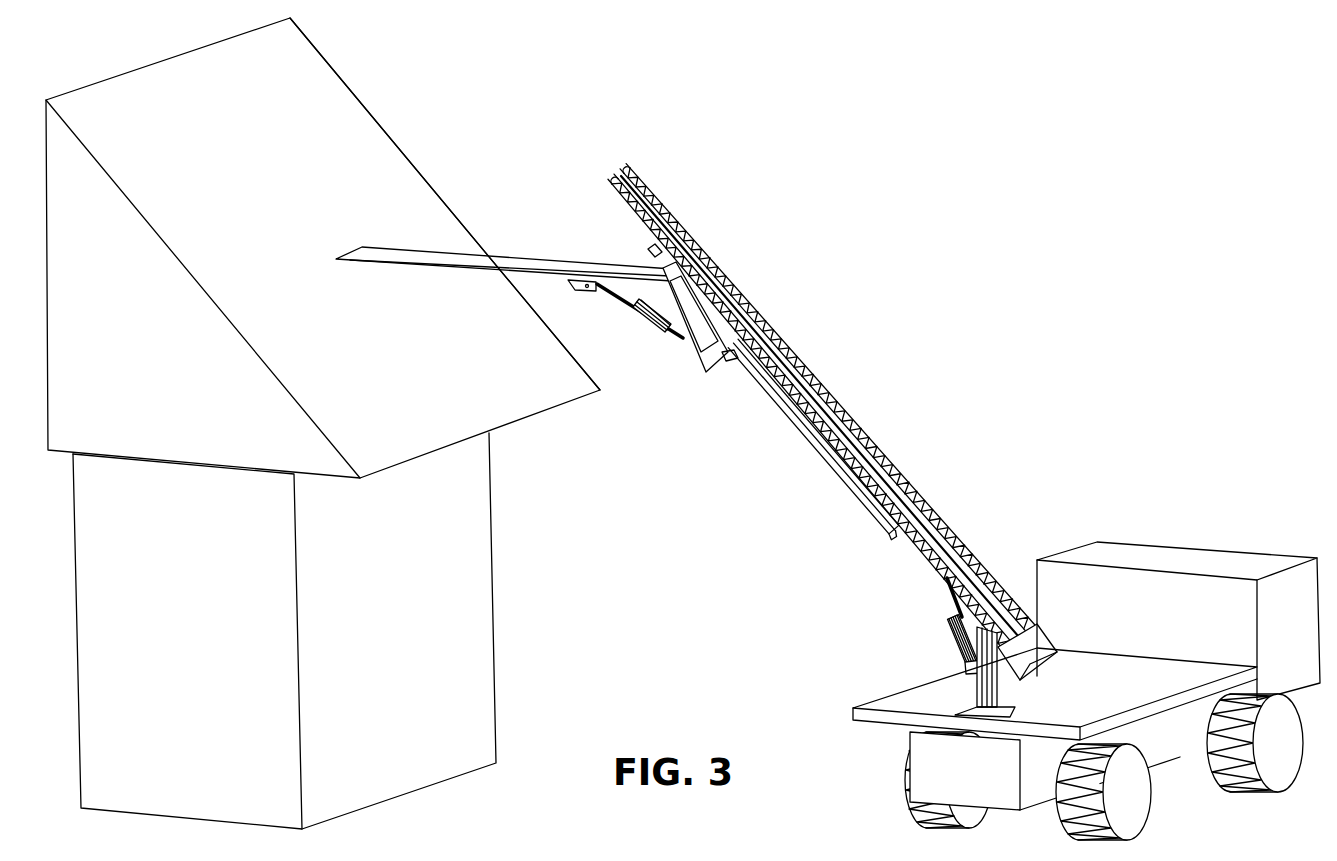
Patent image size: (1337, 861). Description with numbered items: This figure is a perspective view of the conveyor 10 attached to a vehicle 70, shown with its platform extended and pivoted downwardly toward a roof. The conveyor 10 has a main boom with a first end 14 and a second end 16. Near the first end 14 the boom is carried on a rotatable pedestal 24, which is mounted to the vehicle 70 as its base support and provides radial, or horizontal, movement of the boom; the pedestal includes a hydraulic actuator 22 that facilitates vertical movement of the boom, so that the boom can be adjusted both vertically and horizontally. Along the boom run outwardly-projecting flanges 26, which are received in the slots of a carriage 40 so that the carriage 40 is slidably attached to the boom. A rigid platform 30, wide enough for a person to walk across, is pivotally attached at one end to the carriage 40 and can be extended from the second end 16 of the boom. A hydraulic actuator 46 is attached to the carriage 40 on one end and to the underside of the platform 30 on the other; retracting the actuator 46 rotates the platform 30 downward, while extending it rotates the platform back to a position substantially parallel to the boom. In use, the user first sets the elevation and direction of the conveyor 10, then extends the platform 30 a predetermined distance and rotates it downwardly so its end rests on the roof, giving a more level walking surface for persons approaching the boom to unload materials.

The conveyor 10 is at (800, 418).
The first end 14 is at (1026, 615).
The second end 16 is at (666, 178).
The hydraulic actuator 22 is at (965, 645).
The rotatable pedestal 24 is at (1000, 692).
The outwardly-projecting flanges 26 is at (860, 497).
The platform 30 is at (530, 262).
The carriage 40 is at (713, 363).
The hydraulic actuator 46 is at (657, 326).
The vehicle 70 is at (1193, 551).